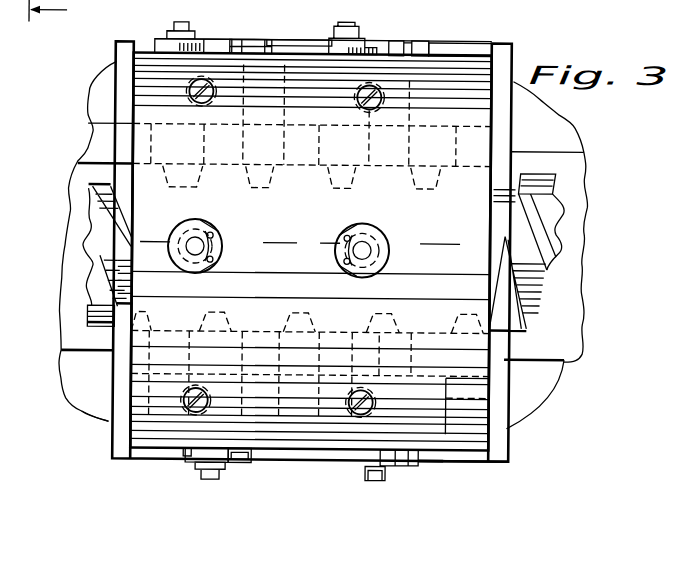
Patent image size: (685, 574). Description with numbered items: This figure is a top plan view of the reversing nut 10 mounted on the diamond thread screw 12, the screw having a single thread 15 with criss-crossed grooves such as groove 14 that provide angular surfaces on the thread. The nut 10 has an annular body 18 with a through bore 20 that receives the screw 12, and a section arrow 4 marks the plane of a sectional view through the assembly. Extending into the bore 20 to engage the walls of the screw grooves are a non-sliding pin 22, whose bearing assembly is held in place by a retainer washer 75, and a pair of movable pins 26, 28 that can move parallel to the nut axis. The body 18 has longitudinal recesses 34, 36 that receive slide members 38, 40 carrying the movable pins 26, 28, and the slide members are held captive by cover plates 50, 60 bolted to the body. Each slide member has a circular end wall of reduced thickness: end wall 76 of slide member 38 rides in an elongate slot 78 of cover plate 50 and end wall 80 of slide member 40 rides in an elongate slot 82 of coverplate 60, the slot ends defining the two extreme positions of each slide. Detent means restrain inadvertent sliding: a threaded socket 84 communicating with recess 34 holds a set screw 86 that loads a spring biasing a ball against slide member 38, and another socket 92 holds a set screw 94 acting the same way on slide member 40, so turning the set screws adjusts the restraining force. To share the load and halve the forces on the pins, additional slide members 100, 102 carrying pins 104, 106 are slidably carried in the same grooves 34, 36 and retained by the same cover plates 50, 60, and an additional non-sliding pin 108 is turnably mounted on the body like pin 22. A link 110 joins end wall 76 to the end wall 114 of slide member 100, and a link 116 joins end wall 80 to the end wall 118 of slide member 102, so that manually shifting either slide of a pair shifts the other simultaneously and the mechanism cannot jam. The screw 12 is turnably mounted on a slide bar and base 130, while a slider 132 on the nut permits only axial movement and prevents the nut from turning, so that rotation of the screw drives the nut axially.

The section line 4- 4 is at (62, 12).
The reversing nut 10 is at (131, 93).
The diamond thread screw 12 is at (566, 222).
The criss-crossed groove 14 is at (103, 222).
The thread 15 is at (112, 172).
The annular body 18 is at (478, 122).
The through bore 20 is at (175, 338).
The pin 22 is at (386, 228).
The movable pin 26 is at (373, 392).
The movable pin 28 is at (341, 192).
The longitudinal recess 34 is at (473, 368).
The longitudinal recess 36 is at (268, 129).
The slide member 38 is at (455, 396).
The slide member 40 is at (271, 98).
The cover plate 50 is at (485, 444).
The coverplate 60 is at (488, 60).
The retainer washer 75 is at (372, 232).
The circular end wall 76 is at (363, 458).
The elongate slot 78 is at (437, 456).
The circular end wall 80 is at (334, 47).
The elongate slot 82 is at (423, 61).
The threaded socket 84 is at (397, 323).
The set screw 86 is at (358, 393).
The socket 92 is at (388, 101).
The set screw 94 is at (371, 109).
The slide member 100 is at (302, 461).
The slide member 102 is at (262, 84).
The pin 104 is at (221, 330).
The pin 106 is at (183, 176).
The non-sliding pin 108 is at (198, 230).
The link 110 is at (267, 470).
The end wall 114 is at (138, 462).
The link 116 is at (359, 37).
The end wall 118 is at (162, 41).
The slide bar and base 130 is at (566, 147).
The slider 132 is at (118, 407).